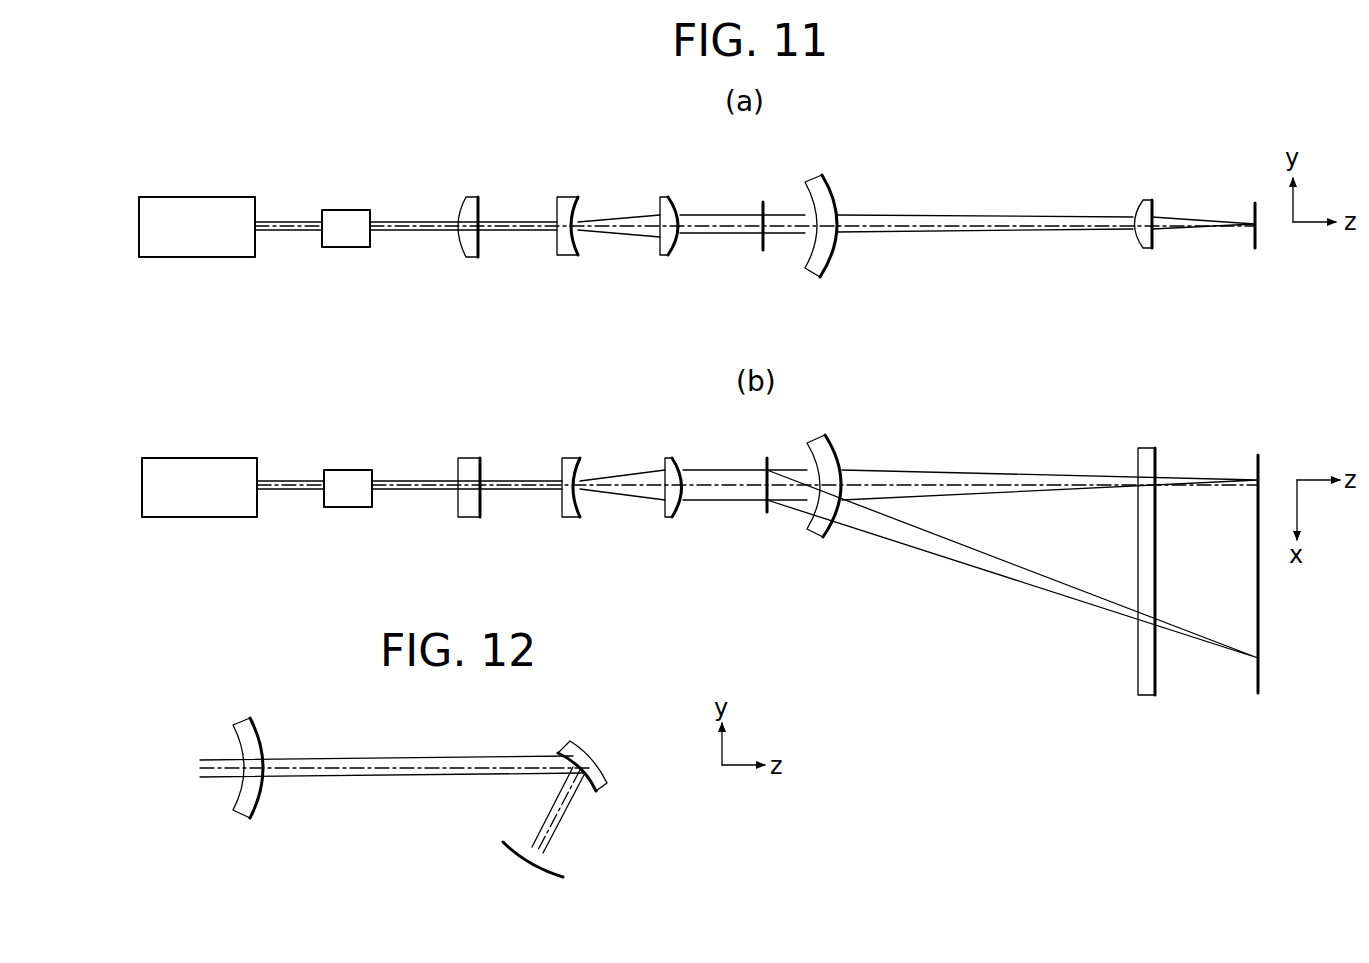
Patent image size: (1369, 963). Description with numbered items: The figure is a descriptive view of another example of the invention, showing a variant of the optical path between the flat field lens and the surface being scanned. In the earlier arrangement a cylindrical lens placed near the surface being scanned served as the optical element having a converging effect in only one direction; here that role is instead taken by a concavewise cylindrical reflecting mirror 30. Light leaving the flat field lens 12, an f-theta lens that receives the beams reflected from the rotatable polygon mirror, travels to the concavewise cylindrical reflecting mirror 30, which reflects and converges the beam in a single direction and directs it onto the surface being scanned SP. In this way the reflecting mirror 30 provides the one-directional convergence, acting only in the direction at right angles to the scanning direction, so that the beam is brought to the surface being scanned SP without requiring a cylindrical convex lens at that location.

The flat field lens 12 is at (247, 734).
The concavewise cylindrical reflecting mirror 30 is at (596, 772).
The surface being scanned SP is at (565, 870).